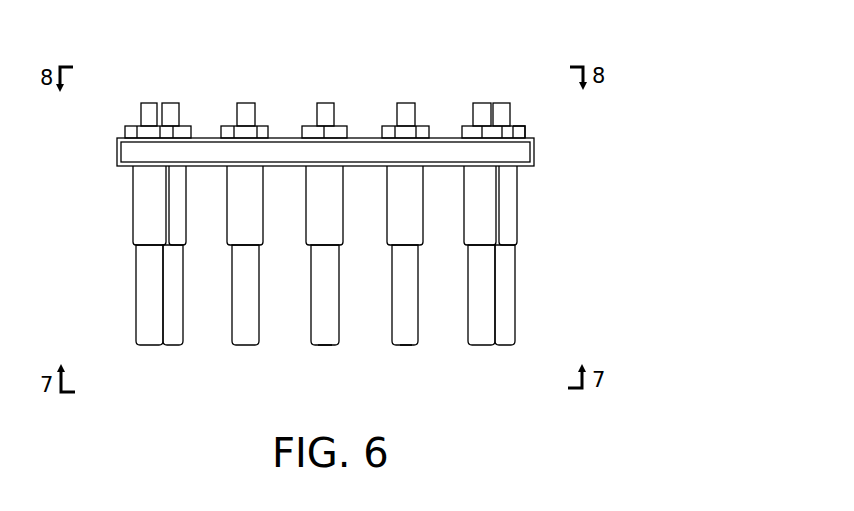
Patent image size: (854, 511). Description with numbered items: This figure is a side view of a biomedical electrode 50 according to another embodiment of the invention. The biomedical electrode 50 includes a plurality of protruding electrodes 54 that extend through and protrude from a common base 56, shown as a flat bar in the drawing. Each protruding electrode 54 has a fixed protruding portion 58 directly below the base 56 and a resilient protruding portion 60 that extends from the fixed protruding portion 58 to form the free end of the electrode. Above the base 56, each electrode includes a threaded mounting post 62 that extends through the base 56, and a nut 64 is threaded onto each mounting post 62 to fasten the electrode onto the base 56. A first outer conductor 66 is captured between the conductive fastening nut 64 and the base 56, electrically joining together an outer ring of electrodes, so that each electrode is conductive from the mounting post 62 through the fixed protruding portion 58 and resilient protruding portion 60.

The biomedical electrode 50 is at (476, 42).
The protruding electrode 54 is at (323, 347).
The base 56 is at (117, 153).
The fixed protruding portion 58 is at (133, 209).
The resilient protruding portion 60 is at (136, 291).
The mounting post 62 is at (170, 103).
The nut 64 is at (345, 126).
The first outer conductor 66 is at (526, 136).